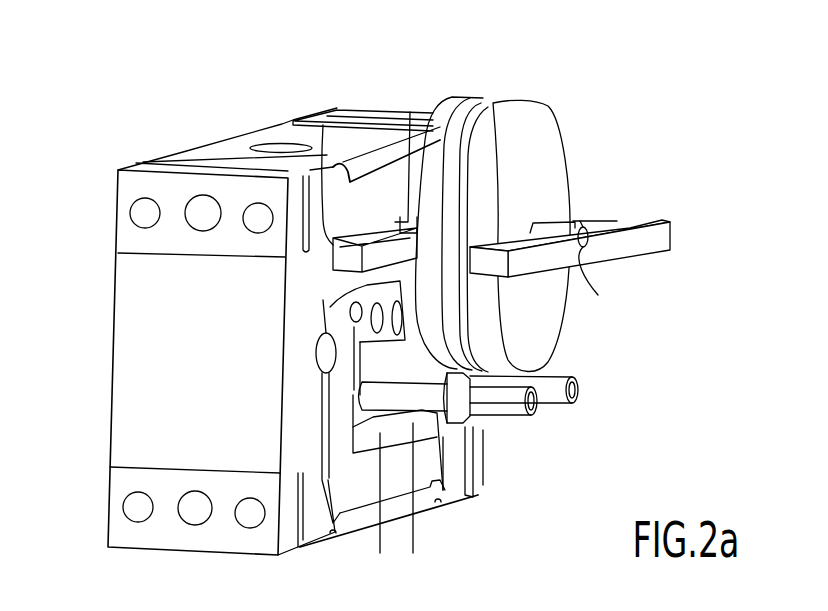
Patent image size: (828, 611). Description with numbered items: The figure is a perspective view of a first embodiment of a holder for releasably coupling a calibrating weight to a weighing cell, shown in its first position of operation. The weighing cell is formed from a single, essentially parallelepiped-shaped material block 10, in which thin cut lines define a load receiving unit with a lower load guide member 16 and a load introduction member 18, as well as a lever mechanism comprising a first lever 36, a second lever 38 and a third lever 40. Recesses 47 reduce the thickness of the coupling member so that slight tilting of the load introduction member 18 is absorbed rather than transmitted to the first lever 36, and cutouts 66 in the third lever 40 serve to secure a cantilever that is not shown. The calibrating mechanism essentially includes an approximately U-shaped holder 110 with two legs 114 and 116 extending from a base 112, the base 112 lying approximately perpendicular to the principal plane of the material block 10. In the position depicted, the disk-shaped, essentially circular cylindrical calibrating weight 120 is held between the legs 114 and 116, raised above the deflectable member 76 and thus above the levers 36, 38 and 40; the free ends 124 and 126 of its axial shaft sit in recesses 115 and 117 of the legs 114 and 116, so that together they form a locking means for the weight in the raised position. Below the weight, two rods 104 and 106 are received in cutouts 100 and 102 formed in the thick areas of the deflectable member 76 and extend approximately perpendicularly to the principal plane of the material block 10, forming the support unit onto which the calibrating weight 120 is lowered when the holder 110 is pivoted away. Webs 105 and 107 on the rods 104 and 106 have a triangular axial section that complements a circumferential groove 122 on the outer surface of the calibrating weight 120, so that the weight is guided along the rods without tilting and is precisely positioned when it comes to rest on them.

The material block 10 is at (243, 103).
The load introduction member 18 is at (297, 427).
The cutout 100 is at (357, 393).
The cutout 102 is at (360, 384).
The recess 47 is at (316, 355).
The cutout 66 is at (376, 312).
The third lever 40 is at (323, 125).
The leg 116 is at (387, 247).
The recess 117 is at (395, 222).
The free end of the shaft 126 is at (406, 130).
The groove 122 is at (487, 105).
The calibrating weight 120 is at (502, 186).
The holder 110 is at (604, 233).
The leg 114 is at (660, 247).
The base 112 is at (609, 221).
The free end of the shaft 124 is at (588, 235).
The recess 115 is at (598, 295).
The rod 104 is at (523, 435).
The web 107 is at (578, 394).
The rod 106 is at (551, 395).
The lower load guide member 16 is at (408, 510).
The web 105 is at (481, 496).
The second lever 38 is at (412, 510).
The deflectable member 76 is at (378, 495).
The first lever 36 is at (362, 493).